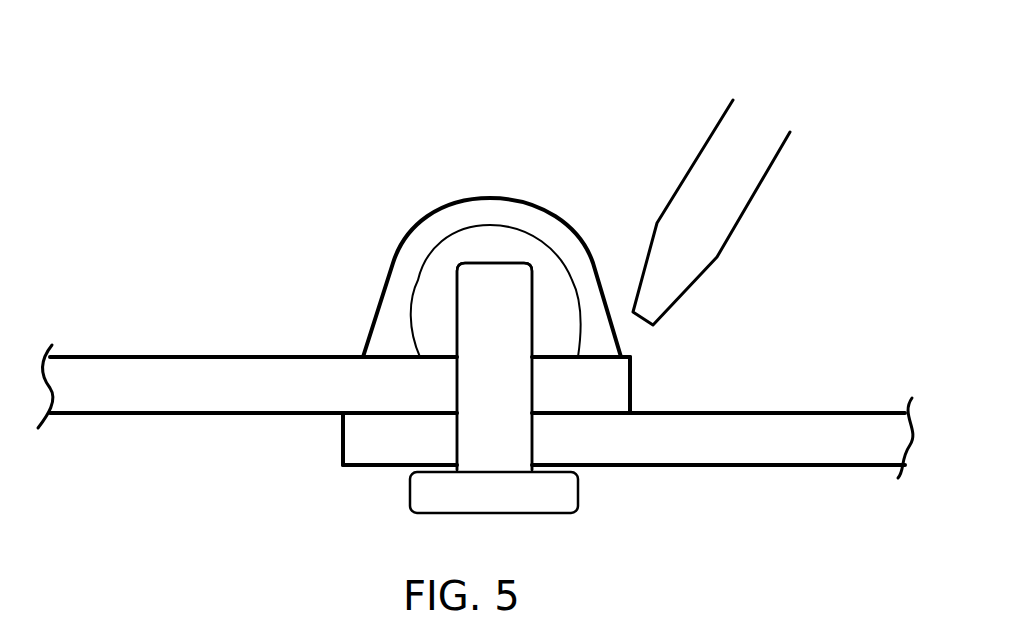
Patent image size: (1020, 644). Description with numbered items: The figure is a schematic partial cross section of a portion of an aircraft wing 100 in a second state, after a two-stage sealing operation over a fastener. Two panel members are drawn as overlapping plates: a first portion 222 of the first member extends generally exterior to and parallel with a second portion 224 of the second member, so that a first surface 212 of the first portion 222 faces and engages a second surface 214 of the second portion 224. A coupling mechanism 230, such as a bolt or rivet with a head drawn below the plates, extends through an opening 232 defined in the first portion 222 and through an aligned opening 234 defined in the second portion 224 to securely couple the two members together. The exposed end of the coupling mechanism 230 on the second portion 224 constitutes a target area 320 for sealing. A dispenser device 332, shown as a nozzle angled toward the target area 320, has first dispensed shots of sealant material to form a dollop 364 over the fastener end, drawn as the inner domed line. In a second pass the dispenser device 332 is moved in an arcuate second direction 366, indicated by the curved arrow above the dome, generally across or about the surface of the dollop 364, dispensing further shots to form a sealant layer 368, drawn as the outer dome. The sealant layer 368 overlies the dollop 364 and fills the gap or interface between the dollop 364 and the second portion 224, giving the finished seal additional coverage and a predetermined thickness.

The aircraft wing 100 is at (475, 438).
The first surface 212 is at (135, 356).
The second surface 214 is at (775, 467).
The first portion 222 is at (339, 468).
The second portion 224 is at (640, 347).
The coupling mechanism 230 is at (523, 515).
The opening 232 is at (504, 426).
The opening 234 is at (504, 362).
The target area 320 is at (476, 246).
The dispenser device 332 is at (753, 241).
The dollop 364 is at (553, 276).
The second direction 366 is at (520, 150).
The sealant layer 368 is at (558, 201).